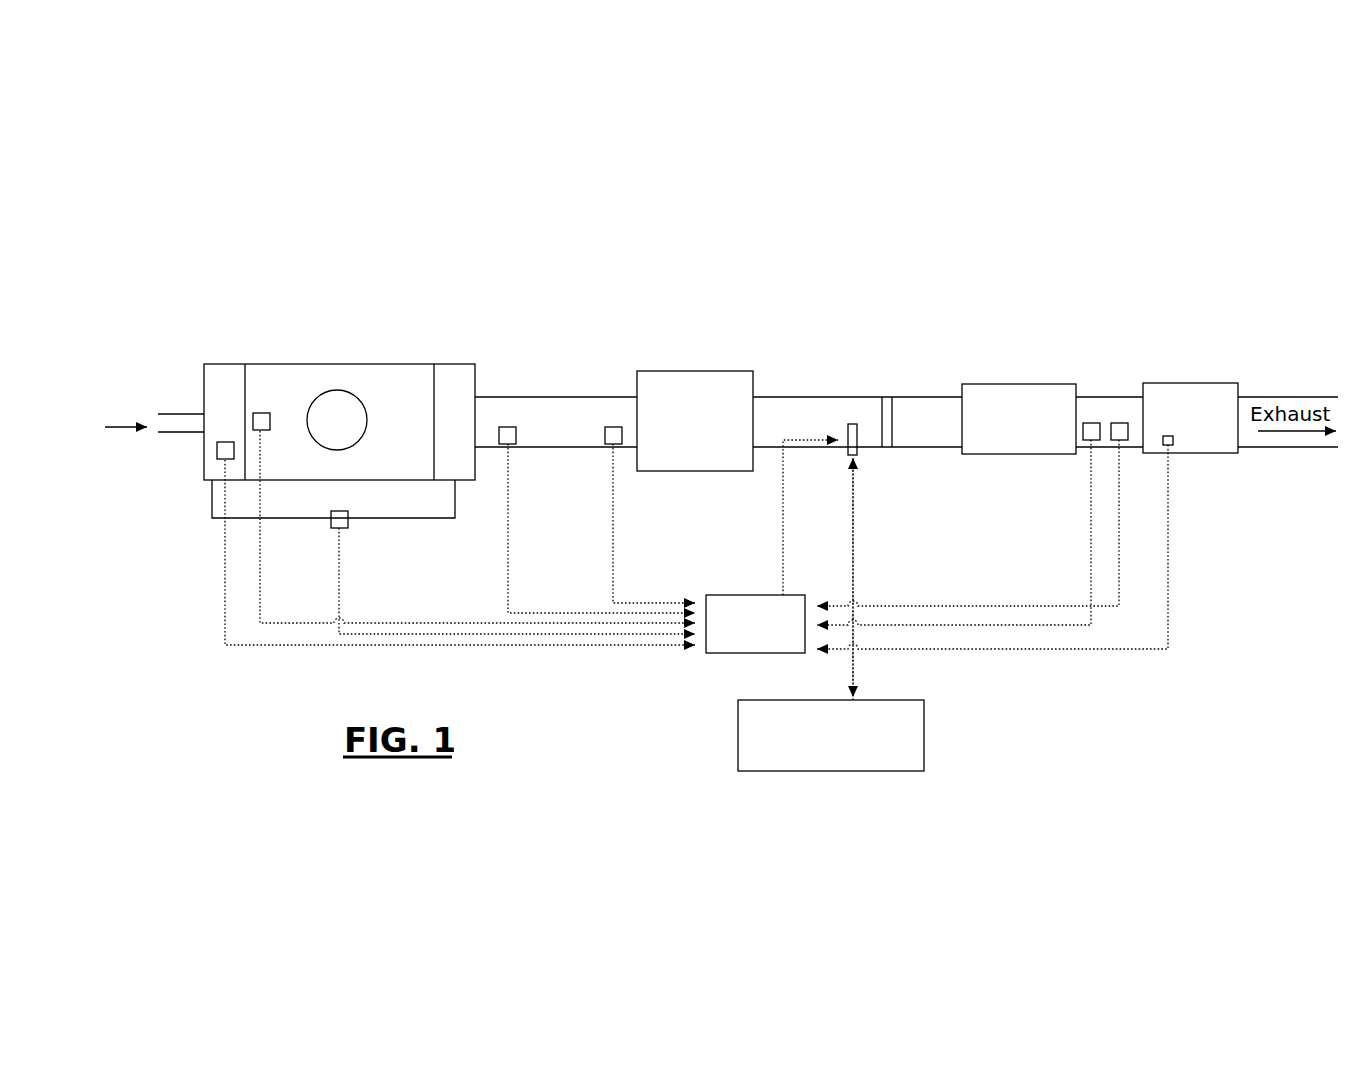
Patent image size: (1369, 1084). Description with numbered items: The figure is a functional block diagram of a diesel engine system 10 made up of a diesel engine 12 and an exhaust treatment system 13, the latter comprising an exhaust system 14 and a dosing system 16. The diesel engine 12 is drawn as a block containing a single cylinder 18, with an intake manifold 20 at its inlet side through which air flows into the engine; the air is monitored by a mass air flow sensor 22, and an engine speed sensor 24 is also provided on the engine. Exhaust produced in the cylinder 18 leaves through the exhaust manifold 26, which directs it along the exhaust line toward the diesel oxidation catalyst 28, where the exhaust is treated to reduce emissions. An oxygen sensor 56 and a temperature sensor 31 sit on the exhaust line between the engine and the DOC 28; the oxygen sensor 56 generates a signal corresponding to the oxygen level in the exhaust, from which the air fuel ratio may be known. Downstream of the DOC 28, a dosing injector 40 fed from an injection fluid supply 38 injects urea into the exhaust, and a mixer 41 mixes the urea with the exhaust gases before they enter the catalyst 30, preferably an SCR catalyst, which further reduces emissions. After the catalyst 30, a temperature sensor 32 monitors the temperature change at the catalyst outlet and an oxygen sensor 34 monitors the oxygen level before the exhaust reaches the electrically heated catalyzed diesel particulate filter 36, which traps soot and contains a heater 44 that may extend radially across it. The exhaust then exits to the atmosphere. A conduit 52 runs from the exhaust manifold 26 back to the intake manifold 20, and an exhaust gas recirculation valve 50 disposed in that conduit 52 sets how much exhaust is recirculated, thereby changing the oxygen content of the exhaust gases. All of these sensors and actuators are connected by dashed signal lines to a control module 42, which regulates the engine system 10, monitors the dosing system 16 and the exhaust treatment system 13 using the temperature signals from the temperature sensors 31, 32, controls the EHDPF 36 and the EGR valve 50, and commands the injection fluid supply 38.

The diesel engine system 10 is at (455, 229).
The diesel engine 12 is at (288, 364).
The exhaust treatment system 13 is at (1076, 262).
The exhaust system 14 is at (1144, 534).
The dosing system 16 is at (982, 718).
The cylinder 18 is at (333, 390).
The intake manifold 20 is at (204, 377).
The mass air flow (MAF) sensor 22 is at (217, 452).
The engine speed sensor 24 is at (262, 413).
The exhaust manifold 26 is at (453, 364).
The diesel oxidation catalyst (DOC) 28 is at (708, 371).
The catalyst 30 is at (1008, 384).
The temperature sensor 31 is at (605, 433).
The temperature sensor 32 is at (1093, 423).
The oxygen sensor 34 is at (1118, 423).
The electrically heated catalyzed diesel particulate filter (EHDPF) 36 is at (1195, 383).
The injection fluid supply 38 is at (908, 700).
The dosing injector 40 is at (852, 424).
The mixer 41 is at (885, 396).
The control module 42 is at (722, 595).
The heater 44 is at (1173, 441).
The exhaust gas recirculation valve 50 is at (348, 522).
The conduit 52 is at (455, 503).
The oxygen sensor 56 is at (507, 427).